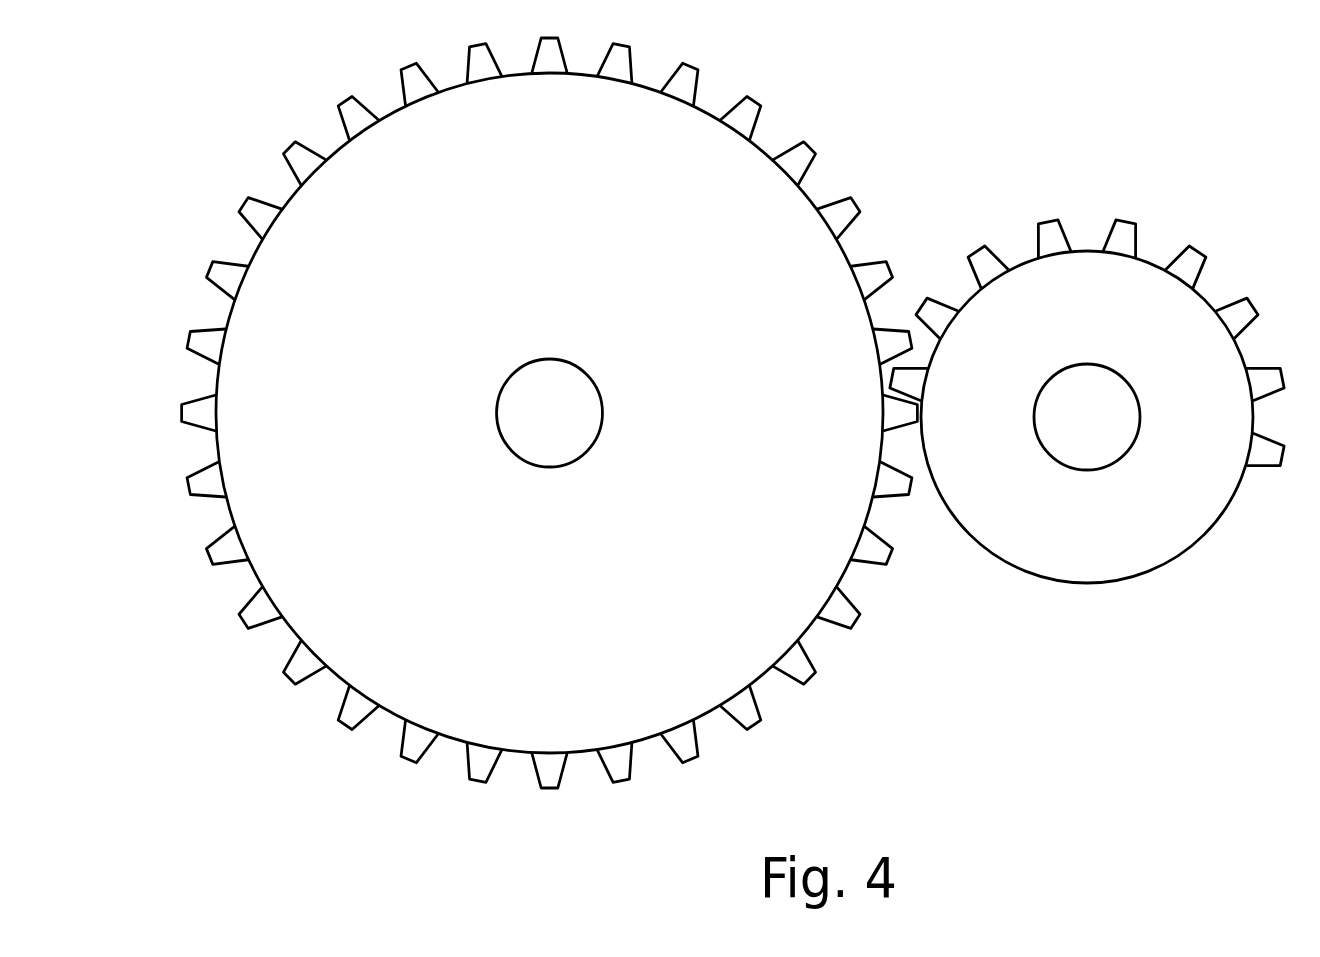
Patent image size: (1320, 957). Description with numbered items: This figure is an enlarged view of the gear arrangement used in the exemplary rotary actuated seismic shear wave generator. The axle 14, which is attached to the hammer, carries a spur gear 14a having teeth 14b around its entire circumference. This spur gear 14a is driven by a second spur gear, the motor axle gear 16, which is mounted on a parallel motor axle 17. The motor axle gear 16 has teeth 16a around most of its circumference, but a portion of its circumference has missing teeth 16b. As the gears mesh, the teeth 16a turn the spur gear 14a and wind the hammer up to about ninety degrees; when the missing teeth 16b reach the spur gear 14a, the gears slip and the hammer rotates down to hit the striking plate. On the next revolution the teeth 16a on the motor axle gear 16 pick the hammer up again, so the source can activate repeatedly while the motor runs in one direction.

The axle 14 is at (550, 428).
The spur gear 14a is at (458, 708).
The teeth 14b is at (750, 735).
The motor axle gear 16 is at (1087, 407).
The teeth 16a is at (1045, 217).
The missing teeth 16b is at (1137, 578).
The motor axle 17 is at (1133, 445).